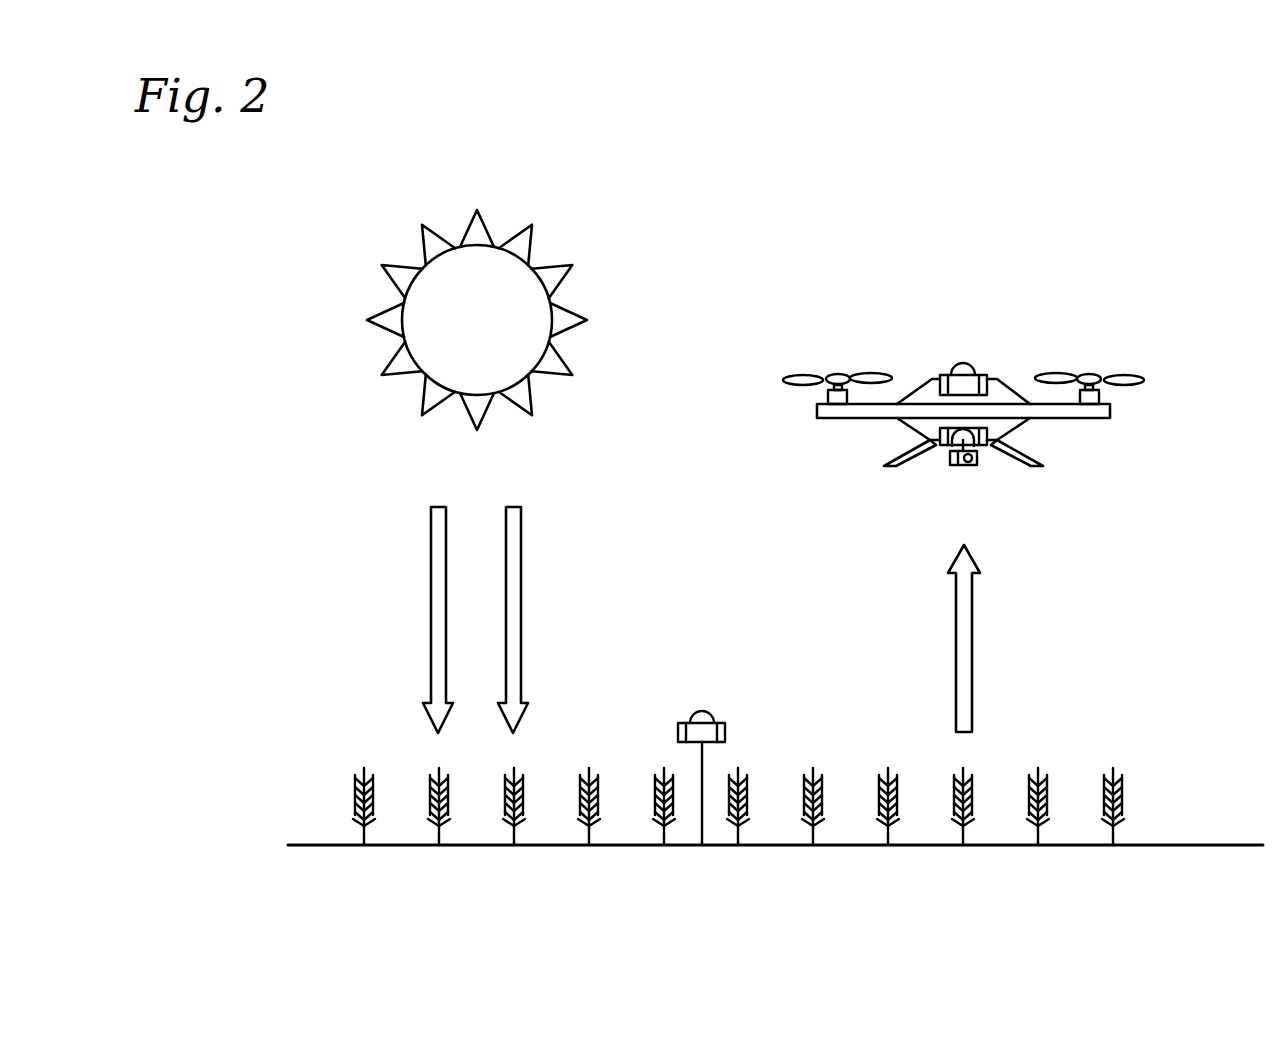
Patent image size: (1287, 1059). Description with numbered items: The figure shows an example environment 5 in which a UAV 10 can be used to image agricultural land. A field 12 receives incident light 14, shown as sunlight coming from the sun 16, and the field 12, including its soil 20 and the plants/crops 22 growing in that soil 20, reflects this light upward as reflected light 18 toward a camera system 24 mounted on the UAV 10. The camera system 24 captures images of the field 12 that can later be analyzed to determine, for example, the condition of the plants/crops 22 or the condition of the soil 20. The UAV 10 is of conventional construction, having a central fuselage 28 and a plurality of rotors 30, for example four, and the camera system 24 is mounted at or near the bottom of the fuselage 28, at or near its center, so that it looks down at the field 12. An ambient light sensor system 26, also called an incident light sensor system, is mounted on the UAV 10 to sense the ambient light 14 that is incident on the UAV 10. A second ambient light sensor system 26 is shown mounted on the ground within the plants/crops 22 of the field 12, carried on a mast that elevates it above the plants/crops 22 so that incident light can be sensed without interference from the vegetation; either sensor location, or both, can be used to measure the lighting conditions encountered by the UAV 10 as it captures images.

The environment 5 is at (726, 247).
The UAV 10 is at (961, 407).
The field 12 is at (1168, 757).
The incident light 14 is at (431, 572).
The sun 16 is at (422, 265).
The reflected light 18 is at (972, 612).
The soil 20 is at (322, 845).
The plants/crops 22 is at (747, 785).
The camera system 24 is at (977, 467).
The ambient light sensor system 26 is at (952, 365).
The central fuselage 28 is at (920, 415).
The rotors 30 is at (792, 375).